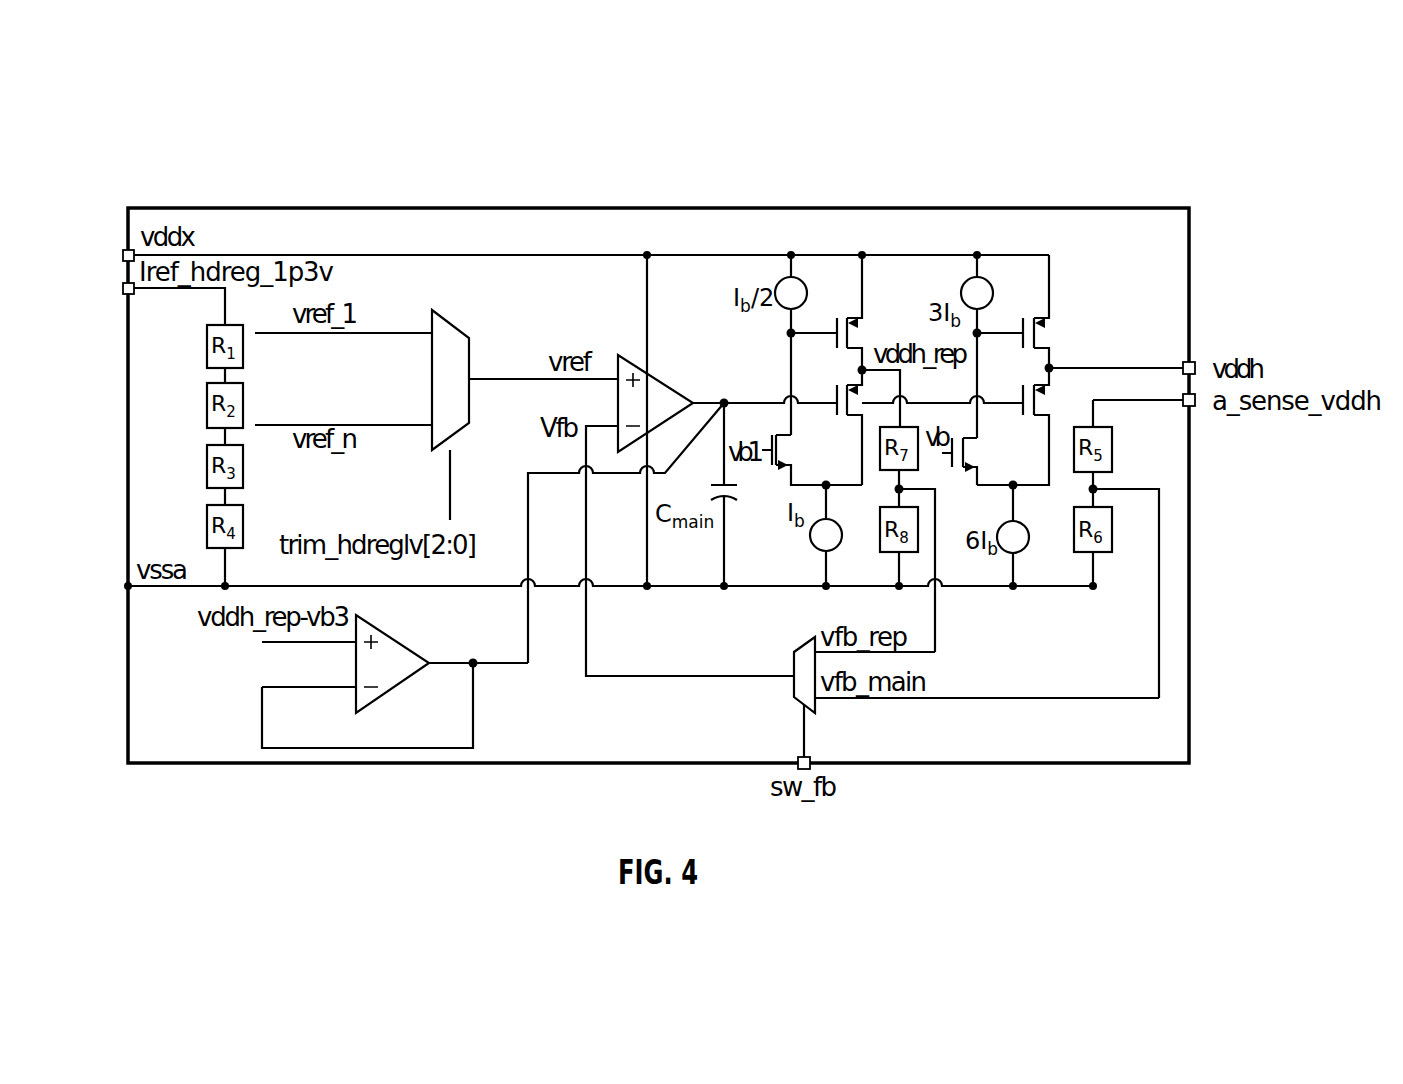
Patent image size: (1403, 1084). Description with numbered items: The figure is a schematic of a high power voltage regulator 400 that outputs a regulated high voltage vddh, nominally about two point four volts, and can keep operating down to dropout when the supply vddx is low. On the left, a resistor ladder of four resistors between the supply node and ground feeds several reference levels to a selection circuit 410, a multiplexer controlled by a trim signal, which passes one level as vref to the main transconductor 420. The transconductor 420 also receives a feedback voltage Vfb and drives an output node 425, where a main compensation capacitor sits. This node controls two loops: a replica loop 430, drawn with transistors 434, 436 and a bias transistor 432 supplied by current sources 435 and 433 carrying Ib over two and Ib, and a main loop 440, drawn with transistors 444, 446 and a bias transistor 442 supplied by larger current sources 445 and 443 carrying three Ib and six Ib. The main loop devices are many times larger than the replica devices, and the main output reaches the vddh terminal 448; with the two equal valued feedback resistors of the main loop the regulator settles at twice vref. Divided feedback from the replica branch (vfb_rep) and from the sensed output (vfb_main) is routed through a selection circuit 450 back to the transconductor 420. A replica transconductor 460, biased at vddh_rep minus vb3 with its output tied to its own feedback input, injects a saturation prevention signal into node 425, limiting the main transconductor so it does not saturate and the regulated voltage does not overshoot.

The voltage regulator 400 is at (1158, 152).
The selection circuit 410 is at (455, 322).
The transconductor 420 is at (618, 358).
The output node 425 is at (724, 398).
The replica loop 430 is at (797, 358).
The current source 432 is at (783, 475).
The current source 433 is at (810, 537).
The replica pass transistor 434 is at (832, 388).
The current source 435 is at (772, 290).
The replica cascode transistor 436 is at (858, 332).
The main loop 440 is at (1040, 364).
The bias transistor 442 is at (976, 452).
The current source 443 is at (1028, 541).
The main pass transistor 444 is at (1045, 410).
The current source 445 is at (995, 293).
The main cascode transistor 446 is at (1045, 332).
The vddh output terminal 448 is at (1196, 365).
The selection circuit 450 is at (794, 660).
The replica transconductor 460 is at (405, 673).